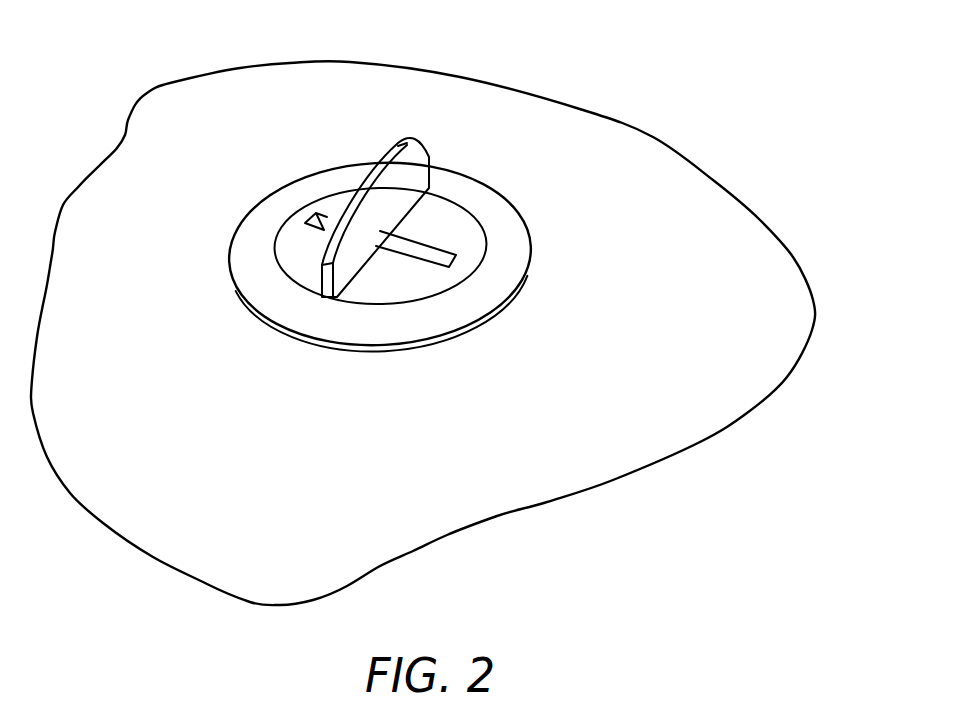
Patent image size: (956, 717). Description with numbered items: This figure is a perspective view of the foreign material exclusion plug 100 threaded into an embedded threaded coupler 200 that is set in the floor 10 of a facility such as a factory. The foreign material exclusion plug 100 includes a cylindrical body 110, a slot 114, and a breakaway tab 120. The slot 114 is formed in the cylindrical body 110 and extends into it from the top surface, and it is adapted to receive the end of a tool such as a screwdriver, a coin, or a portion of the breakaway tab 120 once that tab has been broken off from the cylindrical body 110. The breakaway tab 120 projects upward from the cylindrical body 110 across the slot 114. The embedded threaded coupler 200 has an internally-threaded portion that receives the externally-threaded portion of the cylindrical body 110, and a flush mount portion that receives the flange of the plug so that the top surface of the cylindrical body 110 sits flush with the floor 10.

The floor 10 is at (205, 482).
The foreign material exclusion plug 100 is at (461, 300).
The cylindrical body 110 is at (452, 180).
The slot 114 is at (428, 253).
The breakaway tab 120 is at (353, 202).
The embedded threaded coupler 200 is at (460, 330).